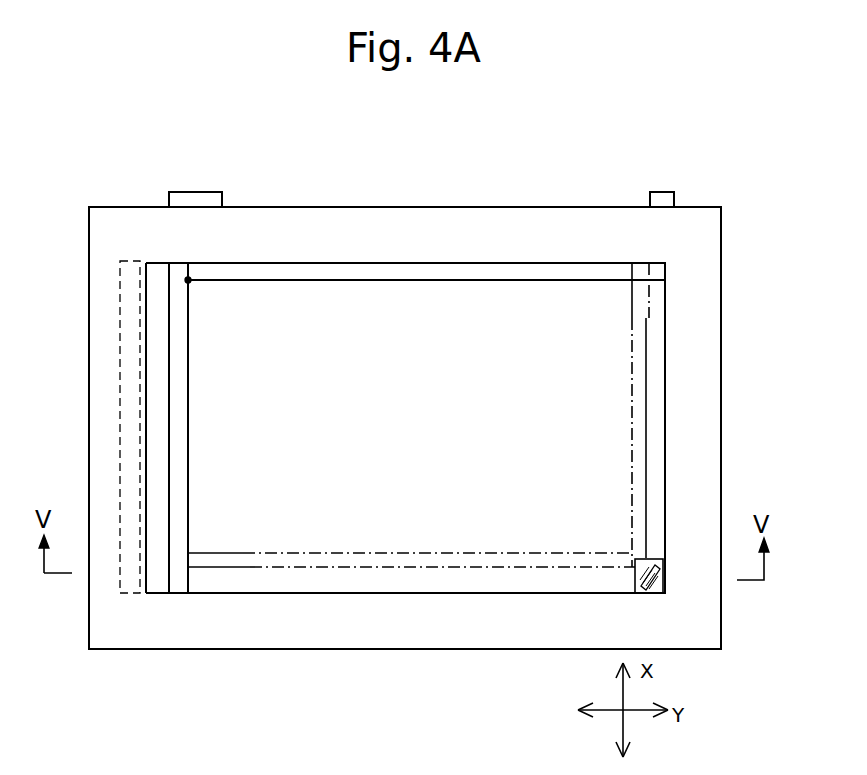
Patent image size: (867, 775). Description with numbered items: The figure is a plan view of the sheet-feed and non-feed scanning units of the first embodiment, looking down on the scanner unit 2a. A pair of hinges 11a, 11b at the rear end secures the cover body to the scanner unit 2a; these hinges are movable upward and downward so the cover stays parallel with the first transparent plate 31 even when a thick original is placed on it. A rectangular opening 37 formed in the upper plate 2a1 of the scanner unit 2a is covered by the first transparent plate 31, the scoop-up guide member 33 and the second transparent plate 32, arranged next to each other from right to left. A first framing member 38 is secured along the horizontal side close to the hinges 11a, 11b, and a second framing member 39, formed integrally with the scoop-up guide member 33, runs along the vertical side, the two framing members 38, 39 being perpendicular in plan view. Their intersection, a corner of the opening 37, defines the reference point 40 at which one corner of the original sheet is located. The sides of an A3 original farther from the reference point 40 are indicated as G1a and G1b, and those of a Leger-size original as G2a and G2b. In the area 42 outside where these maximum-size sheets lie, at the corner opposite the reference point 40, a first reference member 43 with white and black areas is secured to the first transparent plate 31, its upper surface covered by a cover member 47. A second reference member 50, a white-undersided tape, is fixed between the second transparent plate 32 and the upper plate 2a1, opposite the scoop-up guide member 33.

The scanner unit 2a is at (553, 207).
The upper plate 2a1 is at (600, 252).
The hinge 11a is at (194, 198).
The hinge 11b is at (665, 203).
The first transparent plate 31 is at (427, 328).
The second transparent plate 32 is at (160, 278).
The scoop-up guide member 33 is at (183, 272).
The rectangular opening 37 is at (667, 313).
The first framing member 38 is at (335, 272).
The second framing member 39 is at (181, 343).
The reference point 40 is at (189, 281).
The area 42 is at (657, 442).
The first reference member 43 is at (738, 596).
The cover member 47 is at (662, 578).
The second reference member 50 is at (132, 455).
The side of A3 original sheet G1a is at (632, 379).
The side of Leger-size original sheet G2a is at (650, 406).
The side of A3 original sheet G1b is at (312, 567).
The side of Leger-size original sheet G2b is at (437, 560).